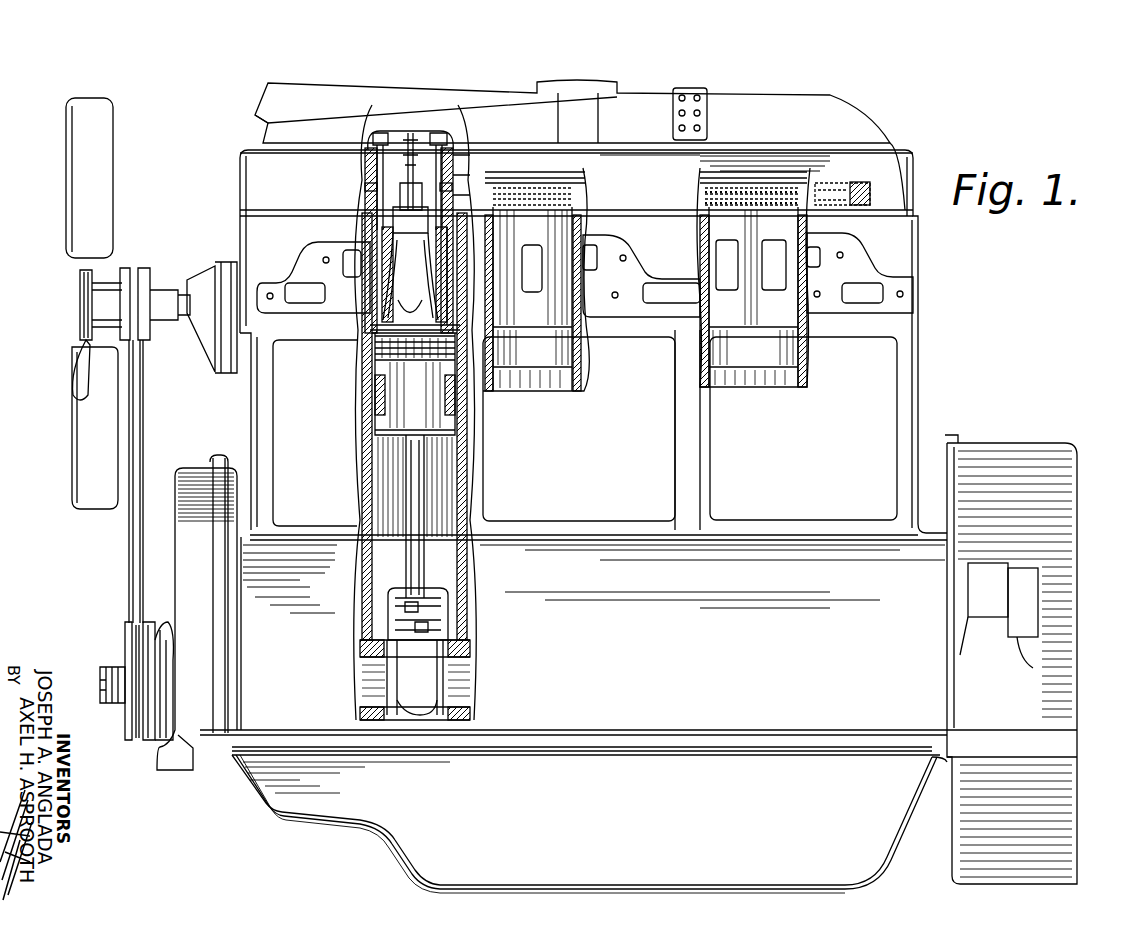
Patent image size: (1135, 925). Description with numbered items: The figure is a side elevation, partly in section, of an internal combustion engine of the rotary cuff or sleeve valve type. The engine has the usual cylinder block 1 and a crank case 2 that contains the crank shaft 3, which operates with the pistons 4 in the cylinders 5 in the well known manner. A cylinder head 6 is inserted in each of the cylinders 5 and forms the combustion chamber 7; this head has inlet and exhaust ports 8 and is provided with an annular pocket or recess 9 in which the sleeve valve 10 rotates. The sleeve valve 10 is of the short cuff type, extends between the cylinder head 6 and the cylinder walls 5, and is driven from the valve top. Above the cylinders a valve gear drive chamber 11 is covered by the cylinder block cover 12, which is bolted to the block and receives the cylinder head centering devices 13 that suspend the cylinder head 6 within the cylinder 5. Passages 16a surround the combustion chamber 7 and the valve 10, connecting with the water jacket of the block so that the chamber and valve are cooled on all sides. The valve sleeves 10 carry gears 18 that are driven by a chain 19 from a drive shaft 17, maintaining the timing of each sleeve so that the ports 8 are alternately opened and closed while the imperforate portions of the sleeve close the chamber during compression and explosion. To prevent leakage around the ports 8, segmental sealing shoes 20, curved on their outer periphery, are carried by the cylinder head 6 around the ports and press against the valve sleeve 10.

The cylinder block 1 is at (903, 397).
The crank case 2 is at (295, 727).
The crank shaft 3 is at (458, 672).
The pistons 4 is at (433, 425).
The cylinders 5 is at (466, 478).
The cylinder head 6 is at (357, 330).
The combustion chamber 7 is at (427, 345).
The ports 8 is at (296, 302).
The annular pocket or recess 9 is at (452, 322).
The sleeve valve 10 is at (449, 287).
The valve gear drive chamber 11 is at (466, 186).
The cylinder block cover 12 is at (895, 177).
The cylinder head centering devices 13 is at (455, 150).
The passages 16a is at (384, 253).
The drive shaft 17 is at (853, 183).
The gears 18 is at (712, 200).
The chain 19 is at (372, 198).
The sealing shoes 20 is at (752, 330).